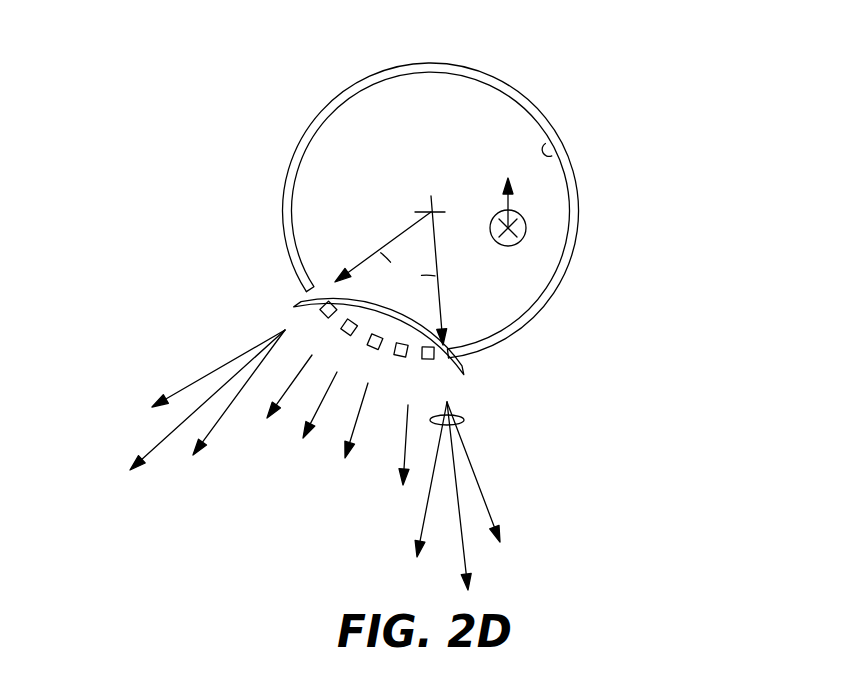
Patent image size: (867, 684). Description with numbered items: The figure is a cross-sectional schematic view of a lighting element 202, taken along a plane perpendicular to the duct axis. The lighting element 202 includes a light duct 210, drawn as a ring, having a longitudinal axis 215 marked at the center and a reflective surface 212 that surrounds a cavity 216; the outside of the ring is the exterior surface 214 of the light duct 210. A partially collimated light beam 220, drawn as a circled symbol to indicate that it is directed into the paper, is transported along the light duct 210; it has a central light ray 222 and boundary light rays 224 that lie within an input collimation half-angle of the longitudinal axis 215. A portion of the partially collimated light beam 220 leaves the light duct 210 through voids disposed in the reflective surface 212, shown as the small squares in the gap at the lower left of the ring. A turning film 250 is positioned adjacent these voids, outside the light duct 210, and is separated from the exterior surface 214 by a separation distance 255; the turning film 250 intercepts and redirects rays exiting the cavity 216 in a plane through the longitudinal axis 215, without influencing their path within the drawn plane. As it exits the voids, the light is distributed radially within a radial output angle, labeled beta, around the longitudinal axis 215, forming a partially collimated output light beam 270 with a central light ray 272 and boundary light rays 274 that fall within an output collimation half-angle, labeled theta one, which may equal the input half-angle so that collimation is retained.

The lighting element 202 is at (425, 203).
The light duct 210 is at (391, 203).
The reflective surface 212 is at (557, 155).
The exterior surface 214 is at (283, 220).
The longitudinal axis 215 is at (428, 206).
The cavity 216 is at (378, 128).
The partially collimated light beam 220 is at (520, 243).
The central light ray 222 is at (523, 223).
The boundary light rays 224 is at (503, 203).
The turning film 250 is at (465, 369).
The separation distance 255 is at (482, 359).
The partially collimated output light beam 270 is at (462, 422).
The central light ray 272 is at (467, 558).
The boundary light rays 274 is at (482, 490).